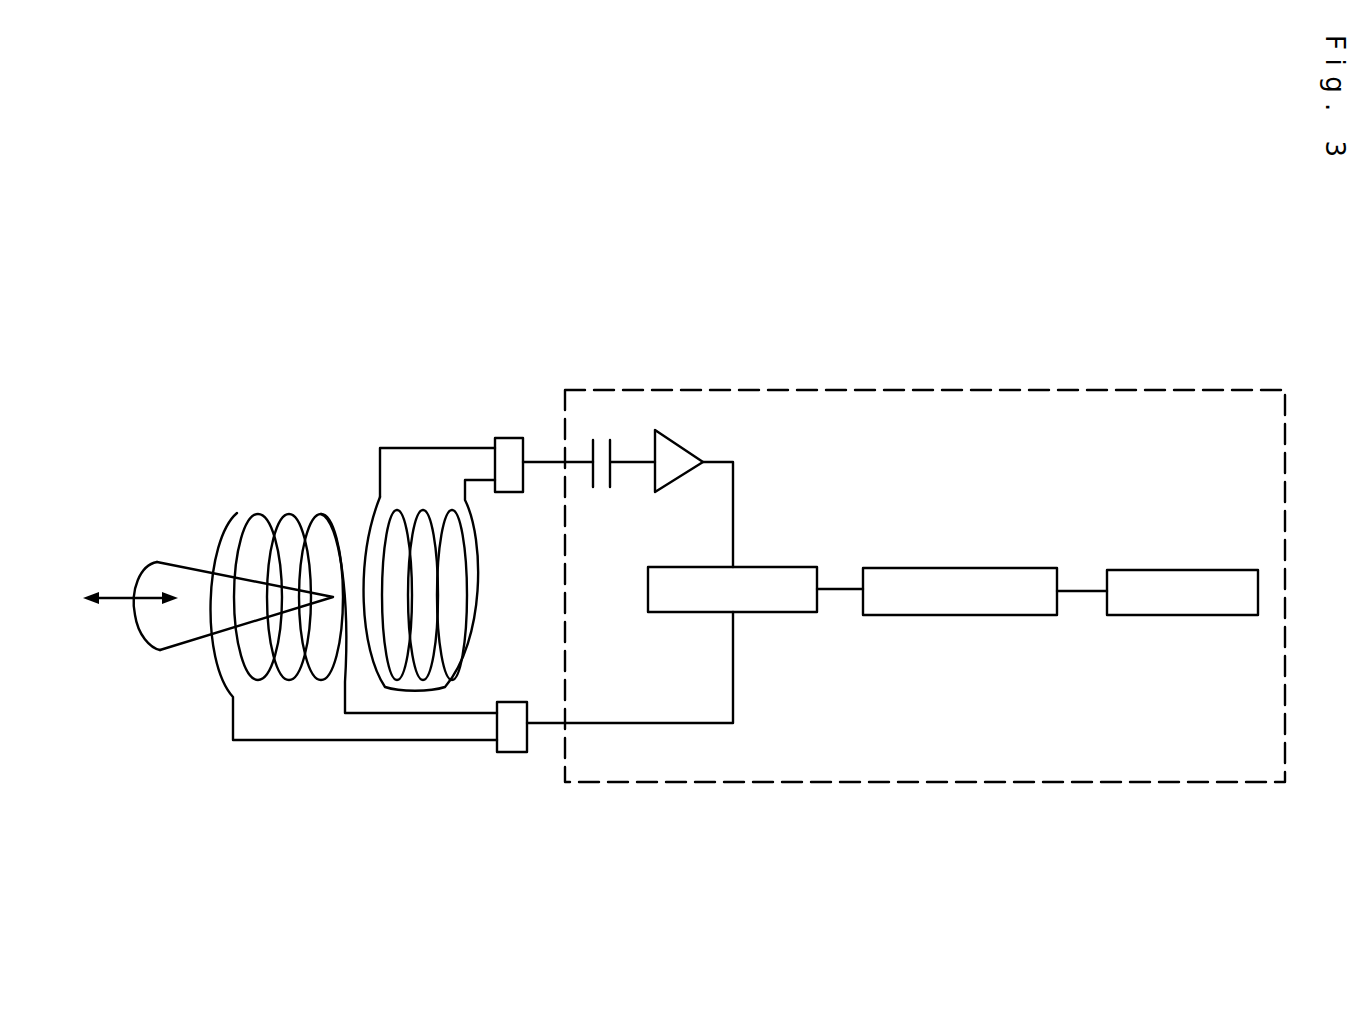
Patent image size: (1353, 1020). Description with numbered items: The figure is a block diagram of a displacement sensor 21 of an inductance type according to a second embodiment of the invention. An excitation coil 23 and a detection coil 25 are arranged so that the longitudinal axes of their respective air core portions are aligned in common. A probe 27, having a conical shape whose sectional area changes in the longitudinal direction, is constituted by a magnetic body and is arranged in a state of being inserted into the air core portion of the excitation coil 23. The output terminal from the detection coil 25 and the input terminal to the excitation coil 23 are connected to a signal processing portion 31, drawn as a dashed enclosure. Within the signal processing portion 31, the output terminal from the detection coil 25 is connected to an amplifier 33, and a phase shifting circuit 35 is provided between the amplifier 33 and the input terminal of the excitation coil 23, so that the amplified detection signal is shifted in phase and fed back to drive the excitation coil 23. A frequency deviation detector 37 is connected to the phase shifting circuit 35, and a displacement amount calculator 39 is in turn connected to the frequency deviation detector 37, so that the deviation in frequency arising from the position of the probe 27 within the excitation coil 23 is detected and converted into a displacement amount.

The displacement sensor 21 is at (366, 388).
The excitation coil 23 is at (297, 677).
The detection coil 25 is at (410, 687).
The probe 27 is at (192, 633).
The signal processing portion 31 is at (952, 391).
The amplifier 33 is at (690, 452).
The phase shifting circuit 35 is at (767, 567).
The frequency deviation detector 37 is at (950, 568).
The displacement amount calculator 39 is at (1183, 570).